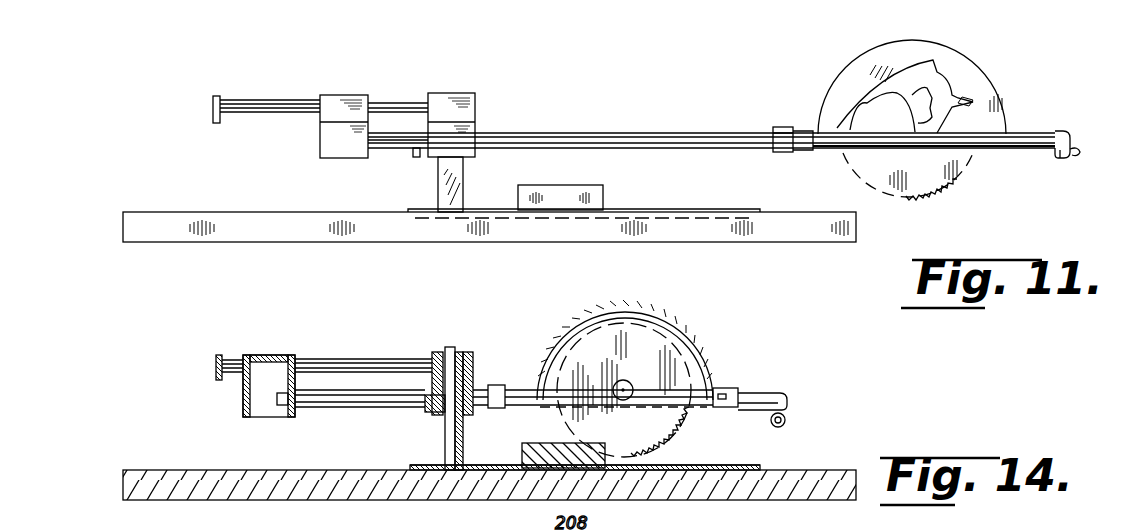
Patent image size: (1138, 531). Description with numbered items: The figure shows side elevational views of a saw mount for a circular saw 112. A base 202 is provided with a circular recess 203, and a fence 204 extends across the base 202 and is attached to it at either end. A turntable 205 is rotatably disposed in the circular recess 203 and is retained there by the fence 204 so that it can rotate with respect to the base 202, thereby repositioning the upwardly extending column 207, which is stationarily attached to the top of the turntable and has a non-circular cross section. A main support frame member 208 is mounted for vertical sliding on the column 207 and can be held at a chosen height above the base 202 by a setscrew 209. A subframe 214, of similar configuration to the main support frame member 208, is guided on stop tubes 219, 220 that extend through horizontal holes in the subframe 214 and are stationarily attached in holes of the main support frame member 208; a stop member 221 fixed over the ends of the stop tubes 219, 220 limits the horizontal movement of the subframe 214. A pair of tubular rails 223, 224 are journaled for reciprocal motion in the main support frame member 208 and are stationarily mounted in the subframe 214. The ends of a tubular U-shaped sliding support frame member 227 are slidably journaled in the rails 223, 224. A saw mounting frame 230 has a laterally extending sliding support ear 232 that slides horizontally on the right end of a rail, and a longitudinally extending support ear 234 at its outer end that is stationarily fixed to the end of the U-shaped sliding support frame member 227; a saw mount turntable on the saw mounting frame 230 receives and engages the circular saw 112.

In FIG. 11, the circular saw 112 is at (965, 53).
In FIG. 14, the circular saw 112 is at (706, 332).
In FIG. 11, the base 202 is at (773, 242).
In FIG. 14, the base 202 is at (777, 492).
In FIG. 14, the circular recess 203 is at (700, 473).
In FIG. 11, the fence 204 is at (603, 200).
In FIG. 14, the fence 204 is at (530, 443).
In FIG. 14, the turntable 205 is at (752, 465).
In FIG. 11, the column 207 is at (438, 187).
In FIG. 14, the column 207 is at (463, 352).
In FIG. 11, the main support frame member 208 is at (475, 105).
In FIG. 14, the main support frame member 208 is at (437, 352).
In FIG. 14, the setscrew 209 is at (432, 412).
In FIG. 11, the subframe 214 is at (345, 95).
In FIG. 14, the subframe 214 is at (272, 355).
In FIG. 14, the stop tube 219 is at (352, 359).
In FIG. 11, the stop tube 220 is at (268, 100).
In FIG. 11, the stop member 221 is at (213, 108).
In FIG. 14, the stop member 221 is at (216, 362).
In FIG. 14, the tubular rail 223 is at (368, 407).
In FIG. 11, the tubular rail 224 is at (572, 133).
In FIG. 11, the U-shaped sliding support frame member 227 is at (1068, 132).
In FIG. 11, the saw mounting frame 230 is at (1046, 150).
In FIG. 14, the saw mounting frame 230 is at (630, 406).
In FIG. 11, the laterally extending sliding support ear 232 is at (785, 127).
In FIG. 11, the longitudinally extending support ear 234 is at (1080, 152).